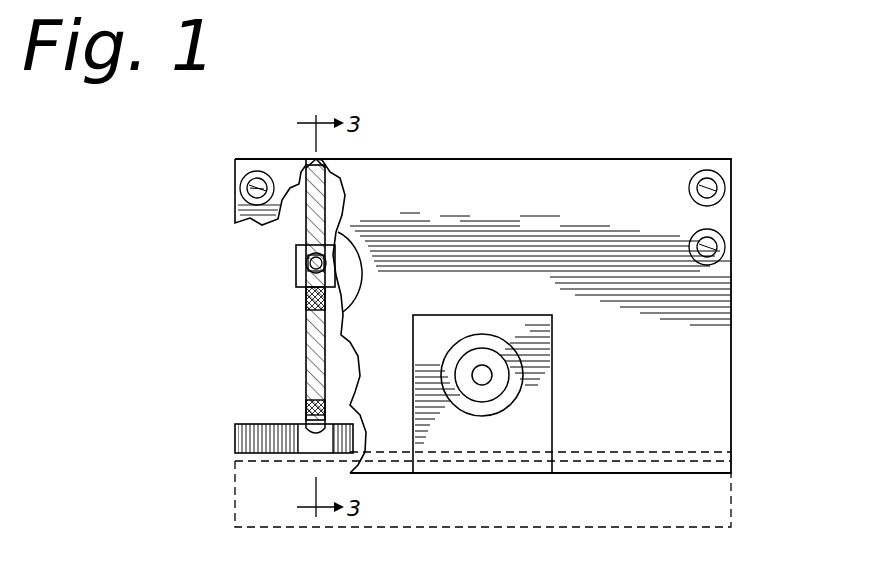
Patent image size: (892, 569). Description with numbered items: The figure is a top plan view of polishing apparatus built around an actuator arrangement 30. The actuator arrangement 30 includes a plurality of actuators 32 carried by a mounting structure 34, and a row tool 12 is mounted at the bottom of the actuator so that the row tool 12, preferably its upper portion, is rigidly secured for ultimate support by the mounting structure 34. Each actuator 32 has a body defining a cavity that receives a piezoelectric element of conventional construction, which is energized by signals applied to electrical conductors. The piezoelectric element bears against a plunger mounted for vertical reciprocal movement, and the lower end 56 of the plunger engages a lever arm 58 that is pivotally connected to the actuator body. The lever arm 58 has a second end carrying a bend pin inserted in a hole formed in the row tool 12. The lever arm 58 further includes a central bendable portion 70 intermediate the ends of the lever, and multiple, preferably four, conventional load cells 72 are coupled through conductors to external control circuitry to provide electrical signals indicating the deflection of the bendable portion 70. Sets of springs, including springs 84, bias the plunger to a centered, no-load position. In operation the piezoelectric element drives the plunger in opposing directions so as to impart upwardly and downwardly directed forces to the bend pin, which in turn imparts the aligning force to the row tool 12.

The row tool 12 is at (262, 425).
The actuator arrangement 30 is at (514, 316).
The actuator 32 is at (296, 333).
The mounting structure 34 is at (707, 382).
The lower end of plunger 56 is at (296, 282).
The lever arm 58 is at (302, 237).
The central bendable portion 70 is at (307, 380).
The load cells 72 is at (297, 288).
The springs 84 is at (296, 265).